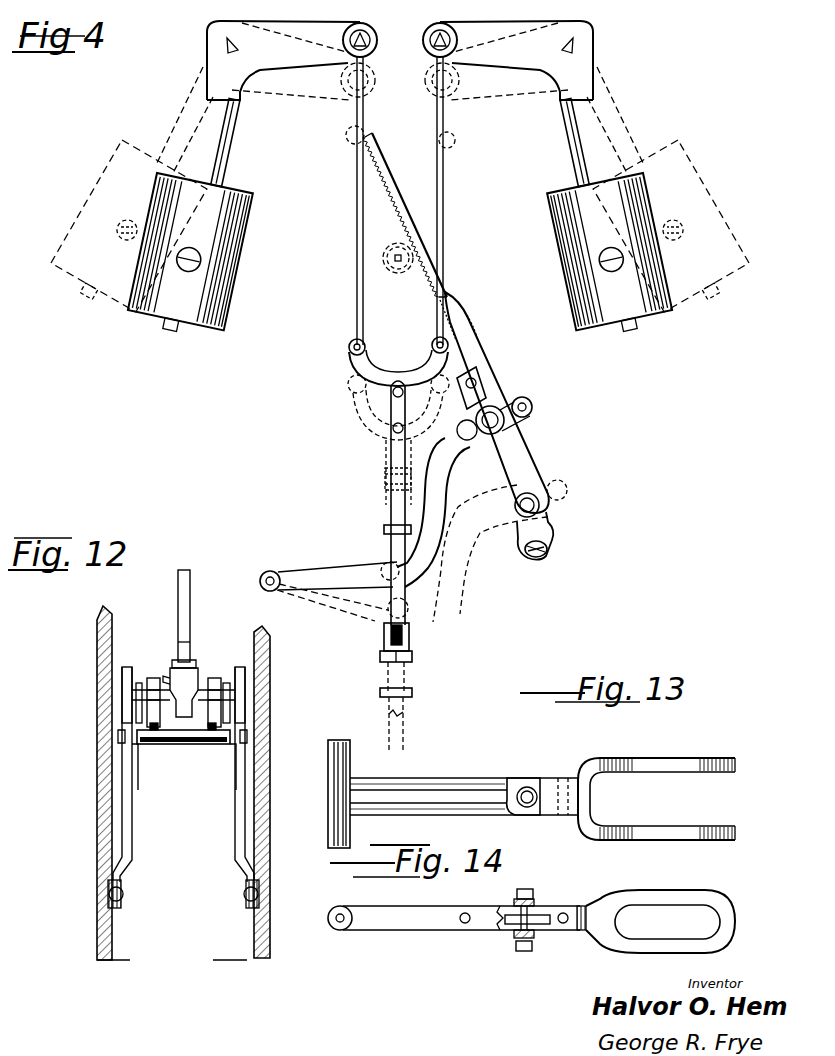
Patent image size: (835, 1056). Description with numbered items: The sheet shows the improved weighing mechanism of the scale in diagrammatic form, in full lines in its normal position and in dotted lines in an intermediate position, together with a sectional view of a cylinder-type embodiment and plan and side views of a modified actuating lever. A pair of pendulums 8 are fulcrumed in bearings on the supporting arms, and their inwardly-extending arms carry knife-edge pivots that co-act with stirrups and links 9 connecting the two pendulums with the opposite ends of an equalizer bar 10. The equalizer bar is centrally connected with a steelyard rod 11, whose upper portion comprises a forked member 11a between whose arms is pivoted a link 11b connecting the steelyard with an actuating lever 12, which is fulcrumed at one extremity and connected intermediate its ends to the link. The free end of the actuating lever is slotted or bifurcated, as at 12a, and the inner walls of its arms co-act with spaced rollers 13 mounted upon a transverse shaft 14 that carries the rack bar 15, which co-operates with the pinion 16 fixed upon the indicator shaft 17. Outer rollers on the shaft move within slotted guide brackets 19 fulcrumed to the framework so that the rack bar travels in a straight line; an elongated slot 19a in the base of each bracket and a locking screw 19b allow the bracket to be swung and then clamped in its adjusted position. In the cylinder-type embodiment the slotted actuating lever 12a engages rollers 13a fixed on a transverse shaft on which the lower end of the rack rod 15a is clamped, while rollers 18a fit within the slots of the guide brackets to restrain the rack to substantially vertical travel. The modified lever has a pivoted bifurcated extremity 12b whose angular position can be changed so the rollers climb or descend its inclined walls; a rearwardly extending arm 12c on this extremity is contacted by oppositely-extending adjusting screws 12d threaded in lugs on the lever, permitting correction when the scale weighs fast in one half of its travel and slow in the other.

In FIG. 4, the pendulums 8 is at (228, 118).
In FIG. 4, the links 9 is at (356, 188).
In FIG. 4, the equalizer bar 10 is at (356, 383).
In FIG. 4, the steelyard rod 11 is at (408, 607).
In FIG. 4, the forked member 11a is at (386, 510).
In FIG. 4, the link 11b is at (384, 532).
In FIG. 4, the actuating lever 12 is at (450, 486).
In FIG. 12, the actuating lever 12a is at (180, 722).
In FIG. 13, the actuating lever 12a is at (458, 778).
In FIG. 14, the actuating lever 12a is at (528, 887).
In FIG. 13, the bifurcated extremity 12b is at (672, 760).
In FIG. 14, the bifurcated extremity 12b is at (690, 890).
In FIG. 13, the rearwardly extending arm 12c is at (523, 796).
In FIG. 14, the rearwardly extending arm 12c is at (540, 914).
In FIG. 14, the adjusting screws 12d is at (524, 950).
In FIG. 4, the rollers 13 is at (500, 421).
In FIG. 12, the rollers 13a is at (212, 682).
In FIG. 4, the transverse shaft 14 is at (497, 404).
In FIG. 12, the transverse shaft 14 is at (232, 700).
In FIG. 4, the rack bar 15 is at (462, 320).
In FIG. 12, the rack rod 15a is at (190, 625).
In FIG. 4, the pinion 16 is at (397, 276).
In FIG. 4, the indicator shaft 17 is at (395, 260).
In FIG. 12, the rollers 18a is at (227, 682).
In FIG. 4, the slotted guide brackets 19 is at (540, 487).
In FIG. 4, the elongated slot 19a is at (548, 535).
In FIG. 12, the elongated slot 19a is at (243, 818).
In FIG. 4, the locking screw 19b is at (552, 544).